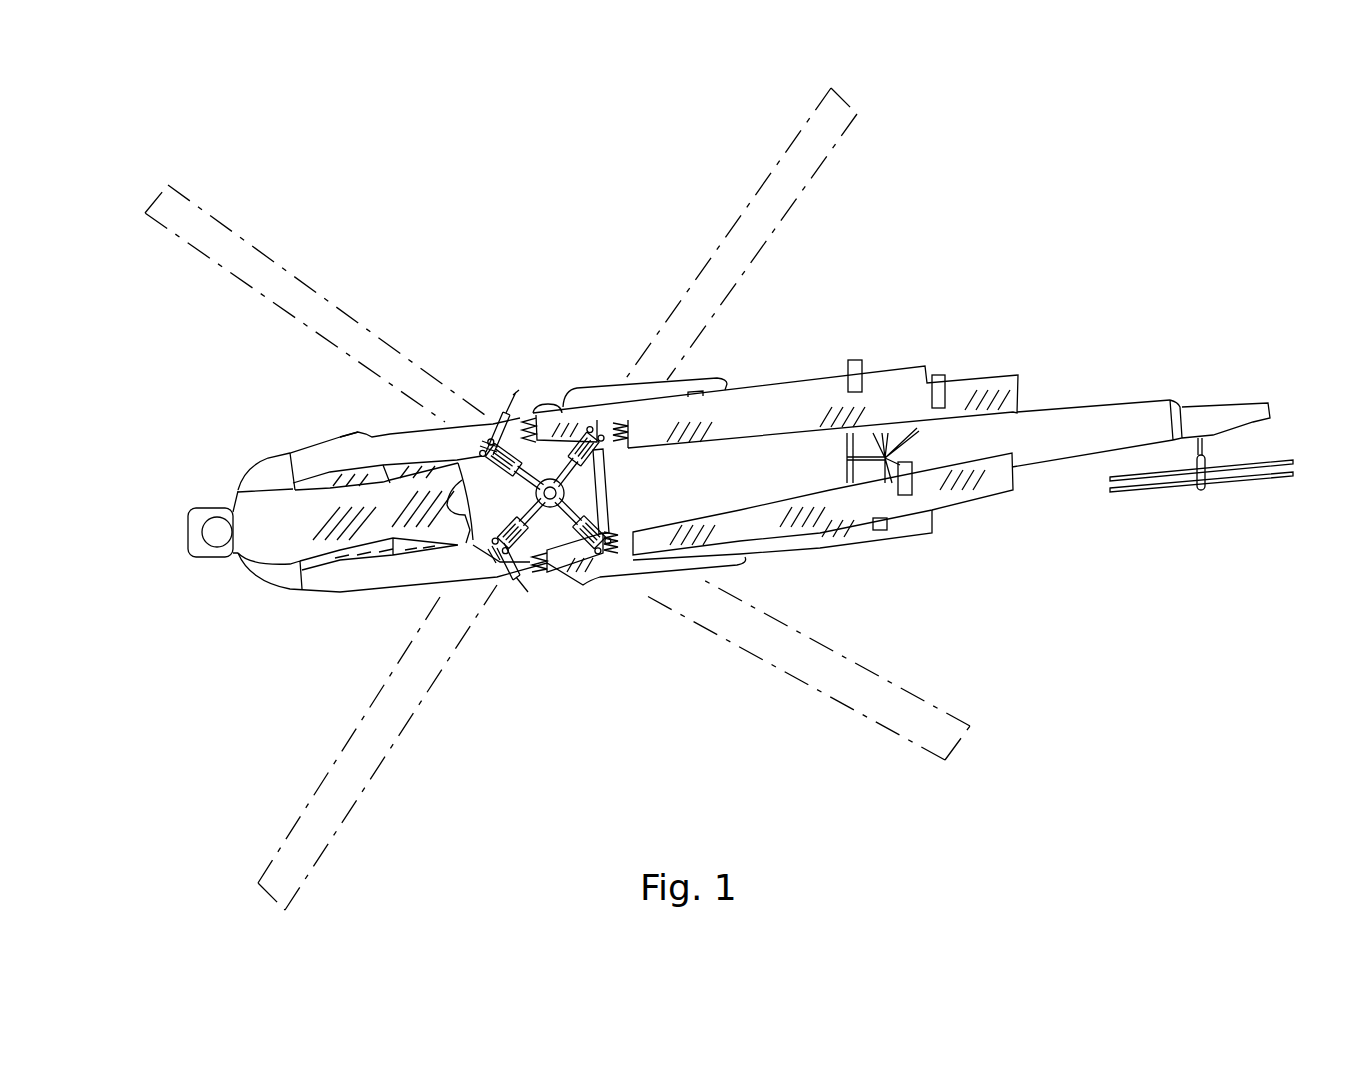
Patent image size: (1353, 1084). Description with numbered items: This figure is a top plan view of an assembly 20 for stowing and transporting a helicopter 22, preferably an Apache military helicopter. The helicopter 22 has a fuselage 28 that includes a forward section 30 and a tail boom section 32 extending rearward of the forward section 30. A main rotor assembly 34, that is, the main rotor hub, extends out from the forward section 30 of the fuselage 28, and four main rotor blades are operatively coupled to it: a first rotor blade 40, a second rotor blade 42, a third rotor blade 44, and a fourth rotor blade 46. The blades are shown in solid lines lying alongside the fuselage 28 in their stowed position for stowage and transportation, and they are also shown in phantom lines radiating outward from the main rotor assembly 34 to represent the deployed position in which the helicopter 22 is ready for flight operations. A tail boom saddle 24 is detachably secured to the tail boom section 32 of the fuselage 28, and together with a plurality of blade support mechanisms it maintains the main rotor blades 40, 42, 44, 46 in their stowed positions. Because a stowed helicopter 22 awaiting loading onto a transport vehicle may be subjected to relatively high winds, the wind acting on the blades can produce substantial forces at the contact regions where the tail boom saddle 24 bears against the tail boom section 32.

The assembly 20 is at (545, 372).
The helicopter 22 is at (303, 440).
The tail boom saddle 24 is at (830, 457).
The fuselage 28 is at (315, 608).
The forward section 30 is at (403, 443).
The tail boom section 32 is at (1058, 417).
The main rotor assembly 34 is at (515, 498).
The first rotor blade 40 is at (775, 415).
The second rotor blade 42 is at (390, 750).
The third rotor blade 44 is at (773, 540).
The fourth rotor blade 46 is at (238, 232).